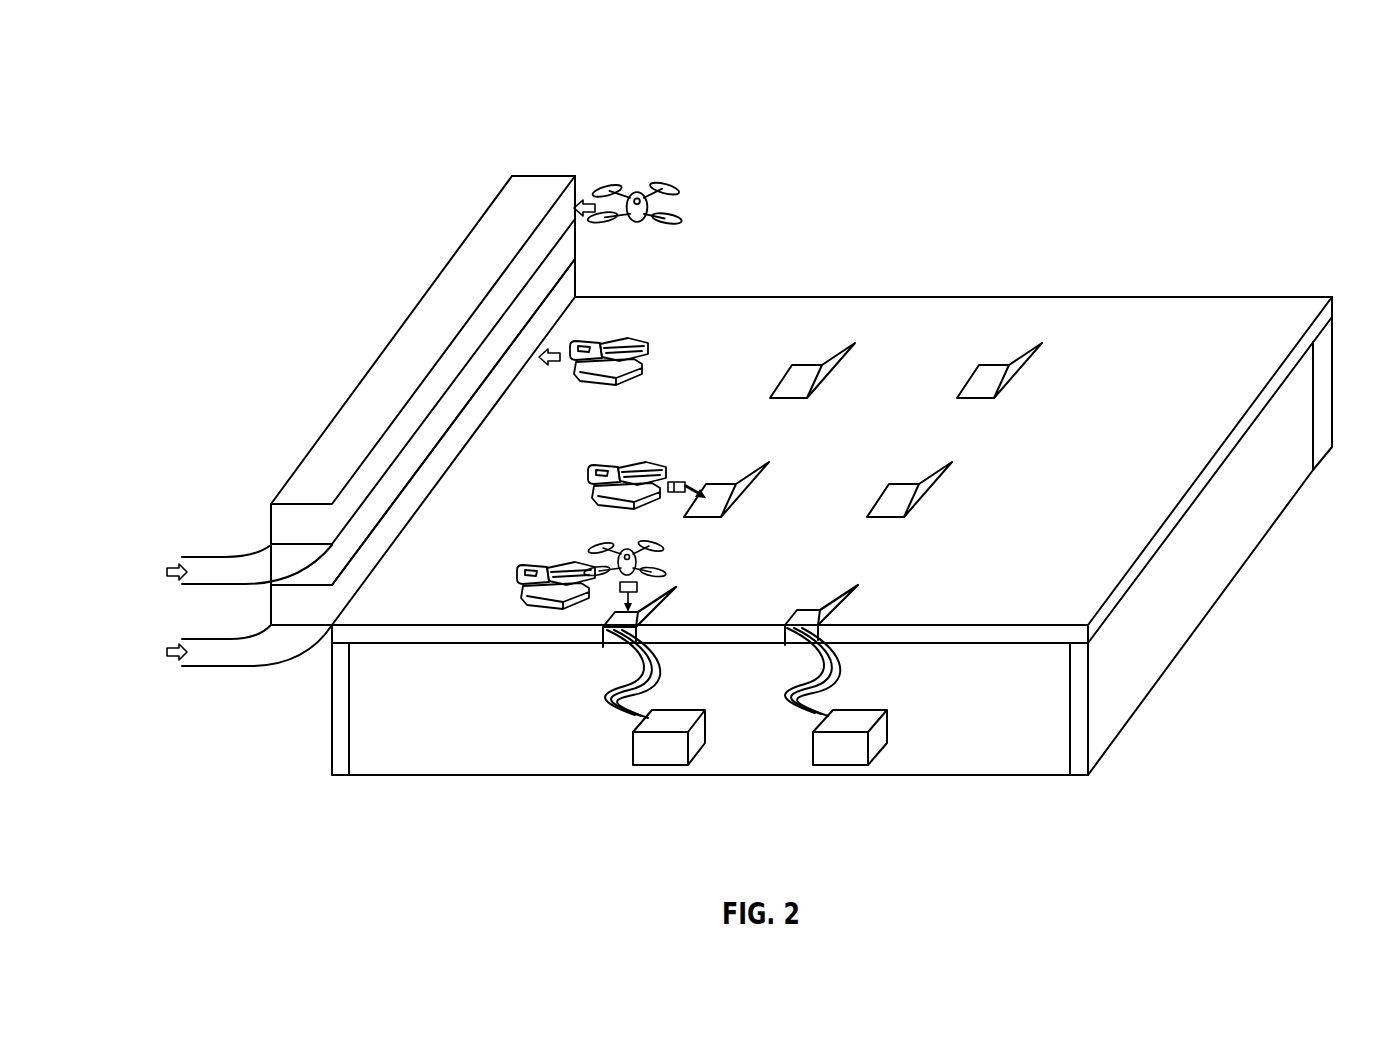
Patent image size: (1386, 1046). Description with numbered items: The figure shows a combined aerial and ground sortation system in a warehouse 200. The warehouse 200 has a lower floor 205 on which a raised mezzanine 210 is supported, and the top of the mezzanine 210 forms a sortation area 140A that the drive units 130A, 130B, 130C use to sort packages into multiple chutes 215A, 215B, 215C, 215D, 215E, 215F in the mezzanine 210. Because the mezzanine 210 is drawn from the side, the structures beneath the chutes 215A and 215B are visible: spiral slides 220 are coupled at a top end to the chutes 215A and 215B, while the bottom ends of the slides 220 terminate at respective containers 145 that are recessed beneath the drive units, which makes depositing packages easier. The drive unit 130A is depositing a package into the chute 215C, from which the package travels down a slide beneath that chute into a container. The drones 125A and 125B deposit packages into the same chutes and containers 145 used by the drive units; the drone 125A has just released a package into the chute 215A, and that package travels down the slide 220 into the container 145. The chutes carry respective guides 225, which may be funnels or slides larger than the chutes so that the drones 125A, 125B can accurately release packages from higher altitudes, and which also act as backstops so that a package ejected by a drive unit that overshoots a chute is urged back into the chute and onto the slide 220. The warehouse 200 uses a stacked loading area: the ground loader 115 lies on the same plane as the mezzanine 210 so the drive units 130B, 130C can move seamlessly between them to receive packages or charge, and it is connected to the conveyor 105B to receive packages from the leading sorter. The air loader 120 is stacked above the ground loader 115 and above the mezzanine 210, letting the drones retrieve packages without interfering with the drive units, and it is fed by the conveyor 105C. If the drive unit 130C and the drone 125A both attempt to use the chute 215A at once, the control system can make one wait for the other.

The warehouse 200 is at (1173, 106).
The mezzanine 210 is at (1123, 598).
The lower floor 205 is at (985, 775).
The sortation area 140A is at (1135, 324).
The air loader 120 is at (378, 377).
The conveyor 105C is at (210, 557).
The conveyor 105B is at (230, 668).
The ground loader 115 is at (368, 537).
The drone 125A is at (600, 562).
The drone 125B is at (641, 190).
The drive unit 130A is at (598, 463).
The drive unit 130B is at (627, 340).
The drive unit 130C is at (540, 563).
The chute 215A is at (672, 571).
The chute 215B is at (815, 588).
The chute 215C is at (723, 483).
The chute 215D is at (905, 483).
The chute 215E is at (810, 362).
The chute 215F is at (990, 362).
The spiral slide 220 is at (603, 702).
The guide 225 is at (680, 588).
The container 145 is at (648, 770).